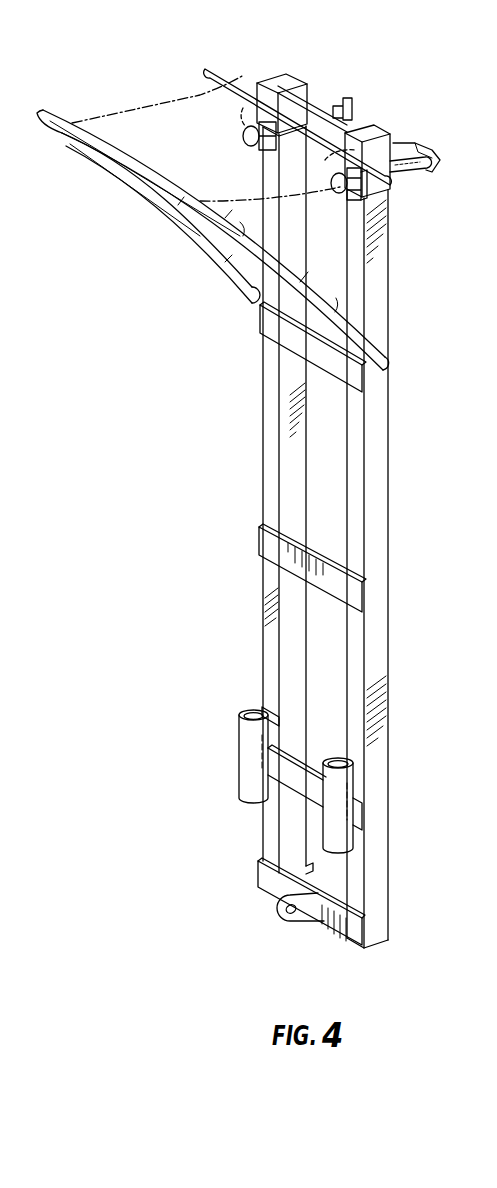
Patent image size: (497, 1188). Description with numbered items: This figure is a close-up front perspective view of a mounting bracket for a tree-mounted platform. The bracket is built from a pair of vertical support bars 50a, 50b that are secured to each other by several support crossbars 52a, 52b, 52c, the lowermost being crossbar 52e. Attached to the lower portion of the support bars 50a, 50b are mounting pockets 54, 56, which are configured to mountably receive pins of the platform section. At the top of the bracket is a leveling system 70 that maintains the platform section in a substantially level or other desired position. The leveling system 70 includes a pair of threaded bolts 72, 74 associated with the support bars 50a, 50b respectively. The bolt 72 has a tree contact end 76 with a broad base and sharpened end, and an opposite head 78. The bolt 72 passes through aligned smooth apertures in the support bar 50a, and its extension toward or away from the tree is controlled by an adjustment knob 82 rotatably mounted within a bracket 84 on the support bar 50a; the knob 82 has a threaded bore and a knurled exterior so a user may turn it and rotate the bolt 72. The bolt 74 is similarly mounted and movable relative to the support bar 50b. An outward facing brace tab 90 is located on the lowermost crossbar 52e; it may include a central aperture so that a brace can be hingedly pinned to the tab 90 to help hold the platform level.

The vertical support bar 50a is at (386, 335).
The vertical support bar 50b is at (262, 470).
The support crossbar 52a is at (352, 377).
The support crossbar 52b is at (260, 540).
The support crossbar 52c is at (310, 785).
The lowermost crossbar 52e is at (260, 873).
The mounting pocket 54 is at (336, 817).
The mounting pocket 56 is at (238, 756).
The leveling system 70 is at (424, 122).
The threaded bolt 72 is at (412, 168).
The threaded bolt 74 is at (329, 106).
The tree contact end 76 is at (496, 166).
The head 78 is at (336, 199).
The adjustment knob 82 is at (362, 183).
The bracket 84 is at (368, 200).
The brace tab 90 is at (278, 908).